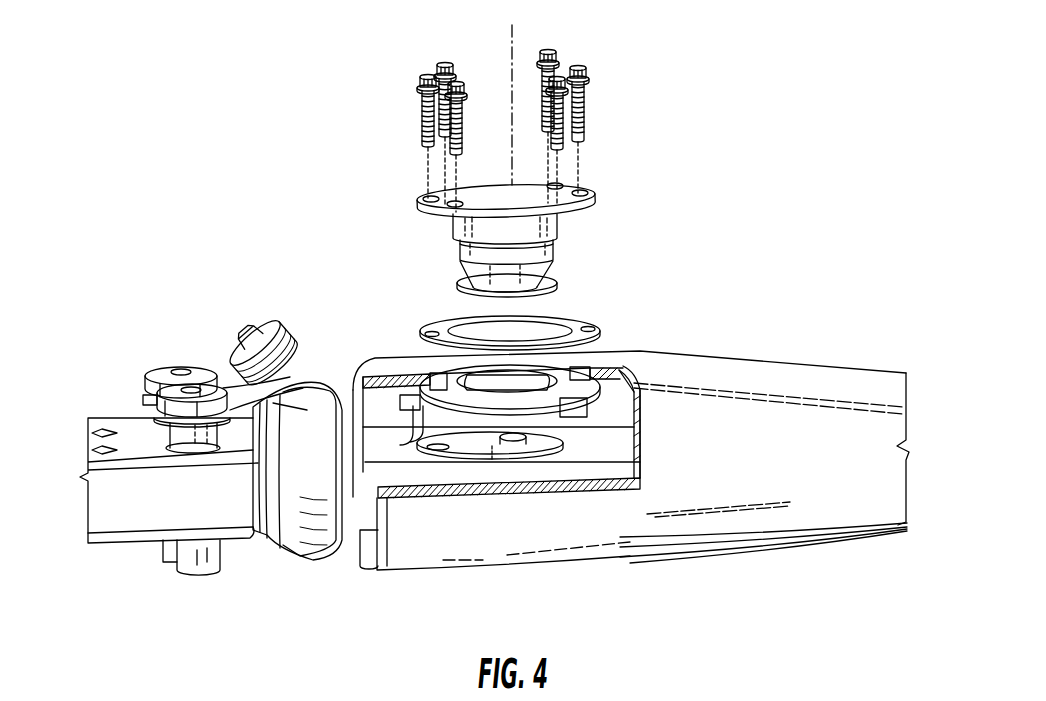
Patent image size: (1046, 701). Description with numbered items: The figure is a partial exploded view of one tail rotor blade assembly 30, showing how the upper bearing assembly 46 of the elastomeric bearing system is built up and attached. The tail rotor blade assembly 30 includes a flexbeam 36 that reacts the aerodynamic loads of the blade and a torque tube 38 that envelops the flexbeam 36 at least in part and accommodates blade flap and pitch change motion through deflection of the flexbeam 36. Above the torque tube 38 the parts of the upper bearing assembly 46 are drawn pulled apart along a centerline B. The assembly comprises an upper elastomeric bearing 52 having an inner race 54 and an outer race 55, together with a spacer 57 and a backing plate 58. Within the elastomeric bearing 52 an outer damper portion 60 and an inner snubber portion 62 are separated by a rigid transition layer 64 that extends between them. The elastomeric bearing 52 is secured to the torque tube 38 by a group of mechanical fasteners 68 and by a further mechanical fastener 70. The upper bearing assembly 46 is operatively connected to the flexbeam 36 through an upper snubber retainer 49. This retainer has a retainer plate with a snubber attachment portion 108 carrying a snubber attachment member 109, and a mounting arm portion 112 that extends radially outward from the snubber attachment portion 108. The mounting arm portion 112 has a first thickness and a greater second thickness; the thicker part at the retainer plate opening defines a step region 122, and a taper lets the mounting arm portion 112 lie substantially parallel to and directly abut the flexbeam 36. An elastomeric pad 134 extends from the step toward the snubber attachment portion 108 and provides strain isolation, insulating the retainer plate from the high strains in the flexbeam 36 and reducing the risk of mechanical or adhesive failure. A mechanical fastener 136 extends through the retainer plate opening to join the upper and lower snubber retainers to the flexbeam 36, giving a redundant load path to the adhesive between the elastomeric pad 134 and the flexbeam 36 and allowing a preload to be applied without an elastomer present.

The axis B is at (510, 66).
The tail rotor blade assembly 30 is at (498, 462).
The flexbeam 36 is at (640, 418).
The torque tube 38 is at (387, 407).
The upper bearing assembly 46 is at (318, 250).
The upper snubber retainer 49 is at (590, 445).
The upper elastomeric bearing 52 is at (518, 232).
The inner race 54 is at (557, 276).
The outer race 55 is at (573, 185).
The spacer 57 is at (605, 322).
The backing plate 58 is at (598, 396).
The outer damper portion 60 is at (465, 230).
The inner snubber portion 62 is at (497, 273).
The rigid transition layer 64 is at (460, 248).
The mechanical fasteners 68 is at (608, 110).
The mechanical fastener 70 is at (640, 404).
The snubber attachment portion 108 is at (545, 443).
The snubber attachment member 109 is at (492, 446).
The mounting arm portion 112 is at (428, 467).
The step region 122 is at (460, 465).
The elastomeric pad 134 is at (507, 452).
The mechanical fastener 136 is at (348, 405).